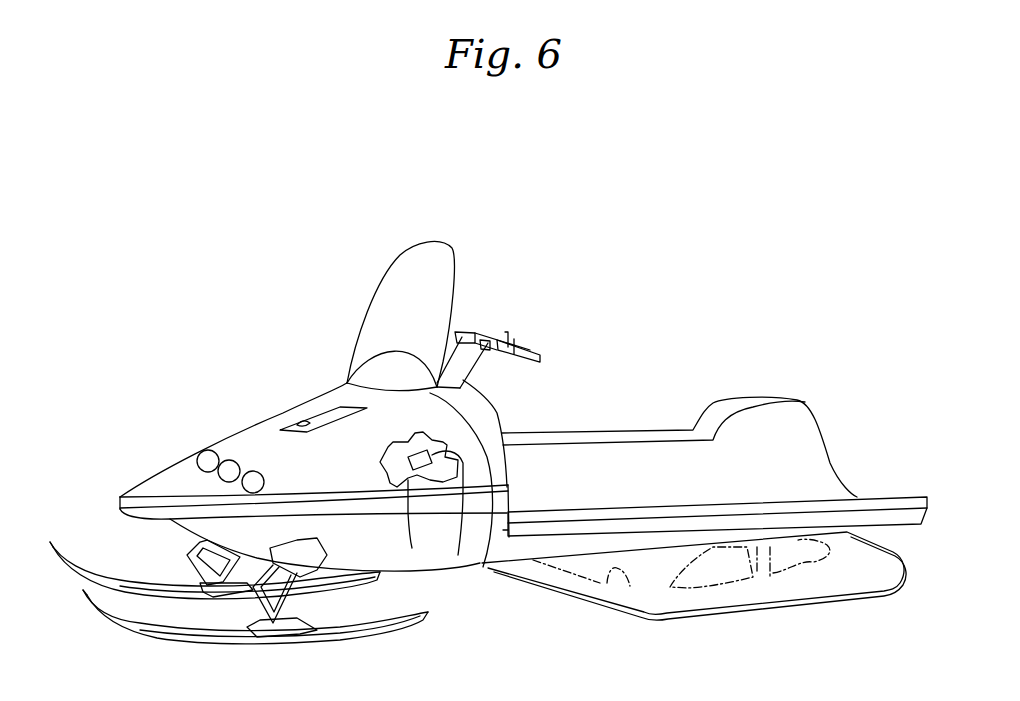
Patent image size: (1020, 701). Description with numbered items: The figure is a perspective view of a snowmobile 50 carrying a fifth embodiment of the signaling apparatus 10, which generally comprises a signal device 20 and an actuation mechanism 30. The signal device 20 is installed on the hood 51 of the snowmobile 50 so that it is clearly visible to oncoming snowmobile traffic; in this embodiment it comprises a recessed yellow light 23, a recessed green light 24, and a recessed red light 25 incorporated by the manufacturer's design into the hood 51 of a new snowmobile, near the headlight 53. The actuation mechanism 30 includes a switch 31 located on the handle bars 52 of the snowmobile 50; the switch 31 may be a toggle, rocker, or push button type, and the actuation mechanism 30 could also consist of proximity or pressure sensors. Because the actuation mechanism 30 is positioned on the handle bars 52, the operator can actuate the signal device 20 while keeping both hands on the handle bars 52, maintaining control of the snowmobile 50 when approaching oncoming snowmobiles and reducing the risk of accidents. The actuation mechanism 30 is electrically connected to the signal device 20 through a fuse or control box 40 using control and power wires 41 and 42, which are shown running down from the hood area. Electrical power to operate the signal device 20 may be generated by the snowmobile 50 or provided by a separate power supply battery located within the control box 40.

The signaling apparatus 10 is at (305, 270).
The signal device 20 is at (143, 414).
The recessed yellow light 23 is at (242, 480).
The recessed green light 24 is at (120, 510).
The recessed red light 25 is at (197, 458).
The actuation mechanism 30 is at (507, 296).
The switch 31 is at (520, 333).
The fuse or control box 40 is at (458, 555).
The control and power wire 41 is at (485, 565).
The control and power wire 42 is at (412, 548).
The snowmobile 50 is at (682, 343).
The hood 51 is at (325, 465).
The handle bars 52 is at (457, 330).
The headlight 53 is at (306, 417).